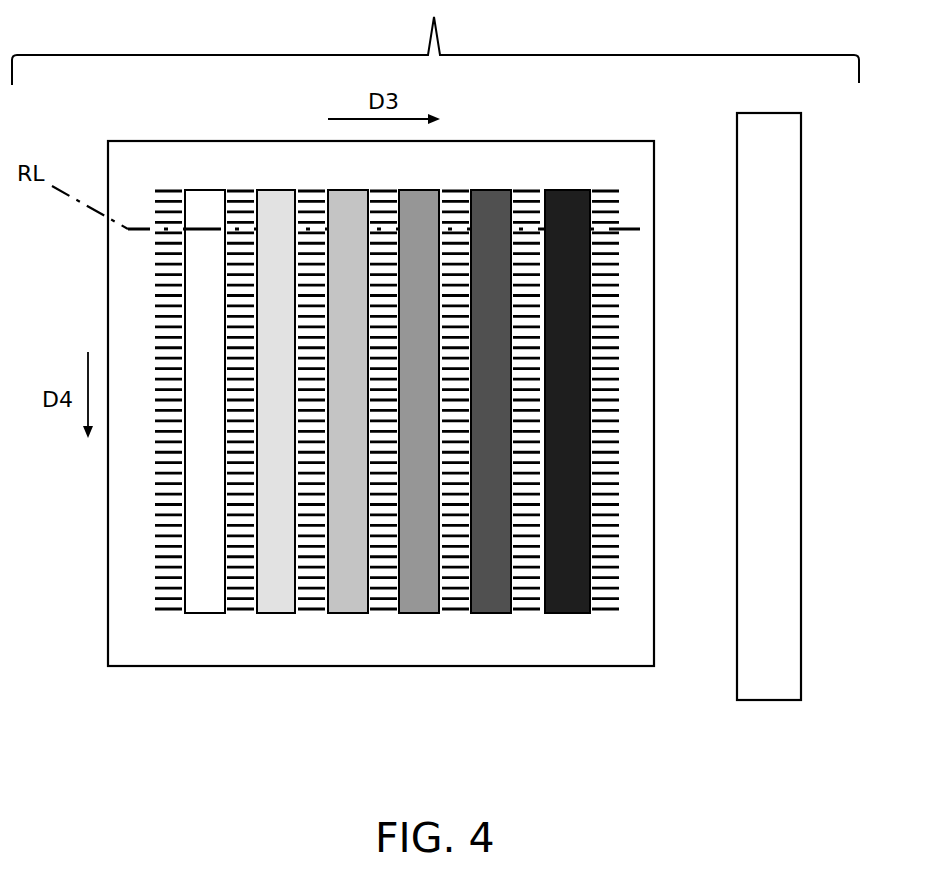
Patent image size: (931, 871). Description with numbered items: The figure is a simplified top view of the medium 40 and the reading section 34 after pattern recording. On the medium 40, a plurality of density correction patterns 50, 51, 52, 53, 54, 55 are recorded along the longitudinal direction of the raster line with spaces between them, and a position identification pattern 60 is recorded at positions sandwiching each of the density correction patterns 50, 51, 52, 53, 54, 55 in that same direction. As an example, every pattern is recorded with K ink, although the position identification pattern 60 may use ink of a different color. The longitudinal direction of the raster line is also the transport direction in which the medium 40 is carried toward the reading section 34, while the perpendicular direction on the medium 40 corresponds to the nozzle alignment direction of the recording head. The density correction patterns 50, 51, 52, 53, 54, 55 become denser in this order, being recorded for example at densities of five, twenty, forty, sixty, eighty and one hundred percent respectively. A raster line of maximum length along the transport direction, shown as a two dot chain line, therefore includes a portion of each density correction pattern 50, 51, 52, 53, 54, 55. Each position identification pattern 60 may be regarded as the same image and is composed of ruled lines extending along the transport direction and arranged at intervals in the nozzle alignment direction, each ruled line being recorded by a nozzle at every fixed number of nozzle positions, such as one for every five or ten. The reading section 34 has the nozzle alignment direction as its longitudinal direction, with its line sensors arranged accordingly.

The reading section 34 is at (773, 700).
The medium 40 is at (507, 667).
The density correction pattern 50 is at (204, 613).
The density correction pattern 51 is at (276, 613).
The density correction pattern 52 is at (347, 613).
The density correction pattern 53 is at (418, 613).
The density correction pattern 54 is at (490, 613).
The density correction pattern 55 is at (564, 613).
The position identification pattern 60 is at (170, 186).